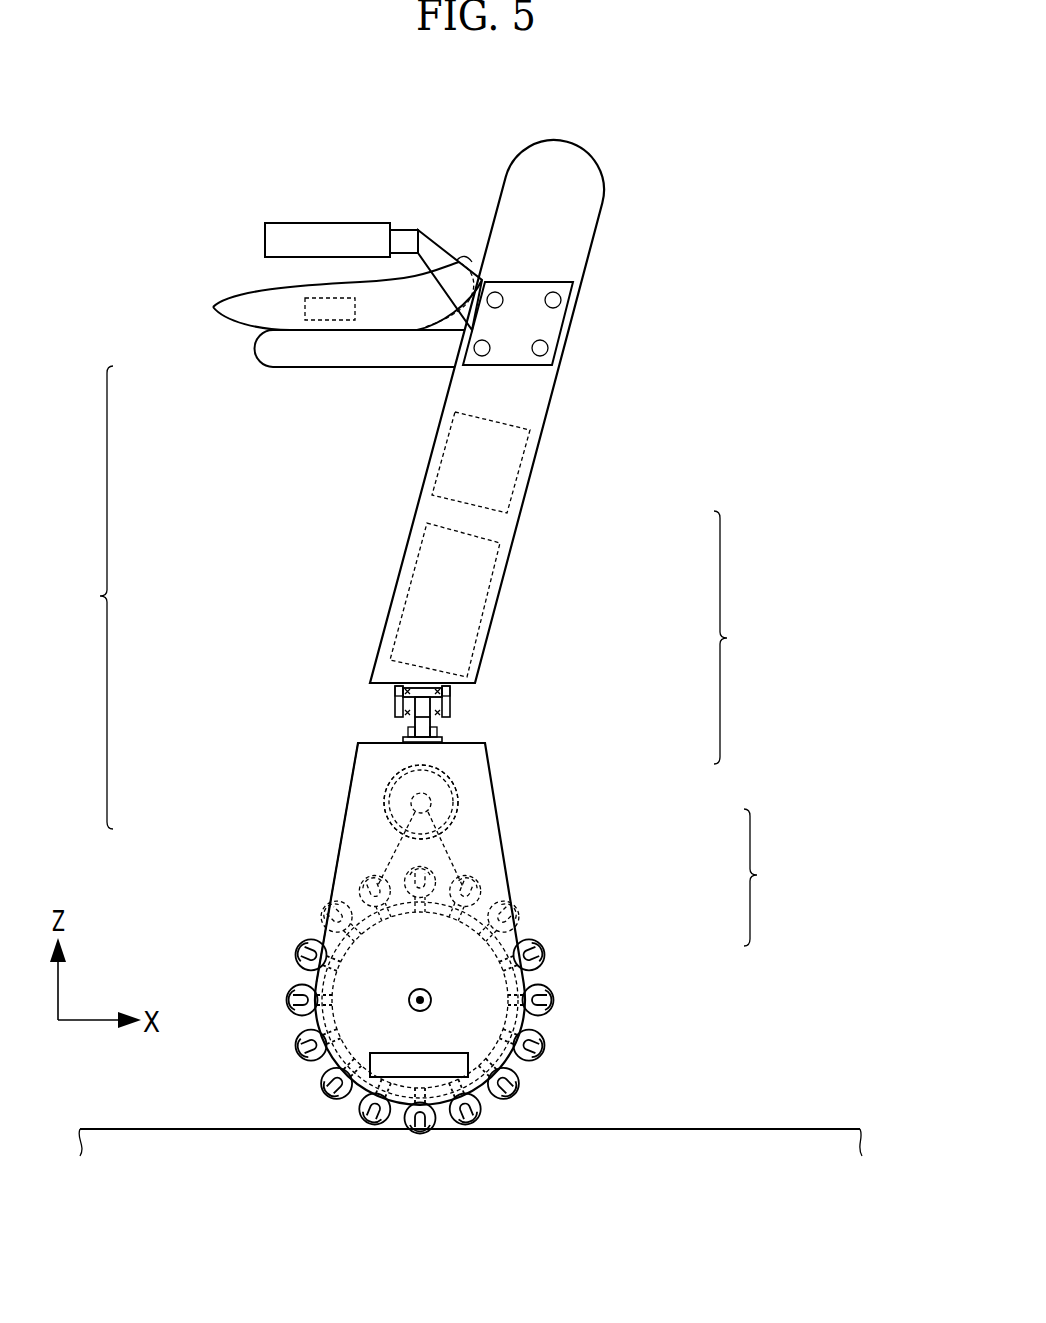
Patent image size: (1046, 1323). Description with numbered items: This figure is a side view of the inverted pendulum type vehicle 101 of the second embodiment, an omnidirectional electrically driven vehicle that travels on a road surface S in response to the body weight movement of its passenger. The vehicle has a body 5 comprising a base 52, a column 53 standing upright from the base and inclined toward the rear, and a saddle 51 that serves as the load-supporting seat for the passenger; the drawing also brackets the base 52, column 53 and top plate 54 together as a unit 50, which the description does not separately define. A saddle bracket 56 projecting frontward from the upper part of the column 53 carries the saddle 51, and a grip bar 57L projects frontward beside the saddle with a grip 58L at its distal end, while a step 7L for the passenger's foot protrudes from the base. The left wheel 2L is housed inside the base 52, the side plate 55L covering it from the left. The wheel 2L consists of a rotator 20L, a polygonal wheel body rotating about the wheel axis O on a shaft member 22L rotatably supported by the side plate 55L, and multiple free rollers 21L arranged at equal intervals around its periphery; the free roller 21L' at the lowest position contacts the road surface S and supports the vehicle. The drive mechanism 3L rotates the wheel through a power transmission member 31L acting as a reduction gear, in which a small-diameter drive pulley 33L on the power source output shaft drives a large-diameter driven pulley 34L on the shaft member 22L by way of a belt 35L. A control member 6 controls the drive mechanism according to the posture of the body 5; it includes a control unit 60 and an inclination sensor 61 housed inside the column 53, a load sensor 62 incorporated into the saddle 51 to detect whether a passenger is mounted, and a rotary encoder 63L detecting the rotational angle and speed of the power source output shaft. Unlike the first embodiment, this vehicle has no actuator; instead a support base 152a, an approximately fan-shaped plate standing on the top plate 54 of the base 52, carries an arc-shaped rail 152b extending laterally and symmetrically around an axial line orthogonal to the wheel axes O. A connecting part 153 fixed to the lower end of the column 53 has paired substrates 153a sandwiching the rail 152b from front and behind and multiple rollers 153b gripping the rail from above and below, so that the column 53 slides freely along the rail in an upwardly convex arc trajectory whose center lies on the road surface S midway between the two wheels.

The vehicle 101 is at (712, 157).
The wheel 2L is at (524, 1091).
The rotator 20L is at (540, 980).
The free roller 21L is at (411, 1156).
The free roller at lower end position 21L' is at (412, 1161).
The shaft member 22L is at (430, 1003).
The drive mechanism 3L is at (451, 784).
The power transmission member 31L is at (776, 877).
The drive pulley 33L is at (458, 803).
The driven pulley 34L is at (513, 907).
The belt 35L is at (462, 866).
The body 5 is at (356, 762).
The occupant support unit 50 is at (739, 637).
The saddle 51 is at (245, 297).
The base 52 is at (485, 747).
The column 53 is at (522, 513).
The top plate 54 is at (445, 738).
The side plate 55L is at (336, 868).
The saddle bracket 56 is at (353, 358).
The grip bar 57L is at (446, 245).
The grip 58L is at (347, 235).
The control member 6 is at (95, 597).
The control unit 60 is at (410, 548).
The inclination sensor 61 is at (442, 450).
The load sensor 62 is at (313, 298).
The rotary encoder 63L is at (384, 810).
The step 7L is at (370, 1056).
The support base 152a is at (403, 739).
The rail 152b is at (398, 698).
The connecting part 153 is at (427, 683).
The substrate 153a is at (400, 705).
The roller 153b is at (396, 689).
The wheel axis O is at (409, 997).
The road surface S is at (798, 1129).